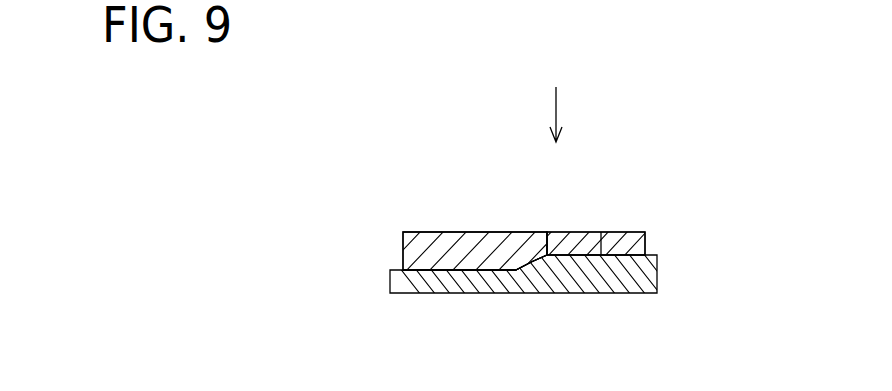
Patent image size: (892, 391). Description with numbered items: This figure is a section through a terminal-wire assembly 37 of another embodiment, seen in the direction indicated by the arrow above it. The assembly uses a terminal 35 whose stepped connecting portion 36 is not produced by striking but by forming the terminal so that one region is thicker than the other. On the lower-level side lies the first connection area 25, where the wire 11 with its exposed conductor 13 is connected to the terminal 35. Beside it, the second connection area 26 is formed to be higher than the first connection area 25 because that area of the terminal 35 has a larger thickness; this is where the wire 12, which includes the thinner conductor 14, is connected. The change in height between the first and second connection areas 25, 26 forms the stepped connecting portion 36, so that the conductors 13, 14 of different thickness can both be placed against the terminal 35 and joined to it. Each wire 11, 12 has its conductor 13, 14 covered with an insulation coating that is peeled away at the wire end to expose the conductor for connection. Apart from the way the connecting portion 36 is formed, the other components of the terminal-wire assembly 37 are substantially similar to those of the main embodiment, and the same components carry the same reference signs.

The conductor 13 is at (424, 237).
The wire 11 is at (475, 251).
The conductor 14 is at (645, 237).
The wire 12 is at (596, 243).
The first connection area 25 is at (468, 270).
The second connection area 26 is at (602, 240).
The stepped connecting portion 36 is at (536, 265).
The terminal 35 is at (657, 277).
The terminal-wire assembly 37 is at (568, 82).